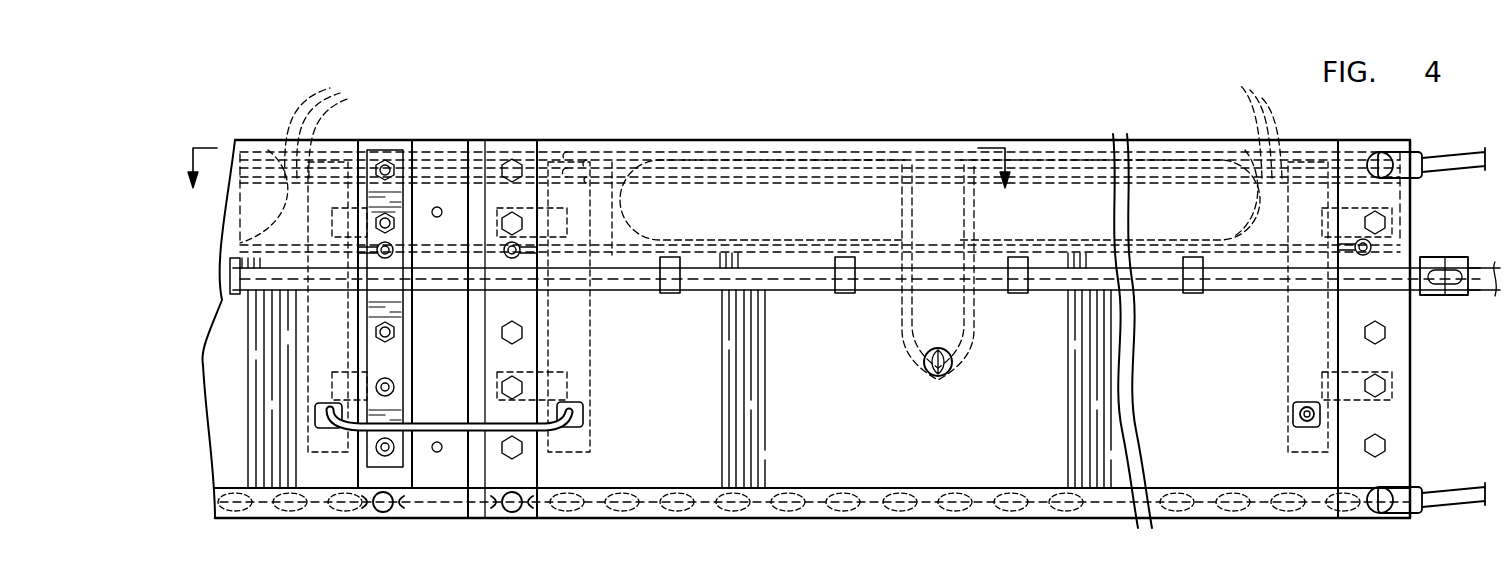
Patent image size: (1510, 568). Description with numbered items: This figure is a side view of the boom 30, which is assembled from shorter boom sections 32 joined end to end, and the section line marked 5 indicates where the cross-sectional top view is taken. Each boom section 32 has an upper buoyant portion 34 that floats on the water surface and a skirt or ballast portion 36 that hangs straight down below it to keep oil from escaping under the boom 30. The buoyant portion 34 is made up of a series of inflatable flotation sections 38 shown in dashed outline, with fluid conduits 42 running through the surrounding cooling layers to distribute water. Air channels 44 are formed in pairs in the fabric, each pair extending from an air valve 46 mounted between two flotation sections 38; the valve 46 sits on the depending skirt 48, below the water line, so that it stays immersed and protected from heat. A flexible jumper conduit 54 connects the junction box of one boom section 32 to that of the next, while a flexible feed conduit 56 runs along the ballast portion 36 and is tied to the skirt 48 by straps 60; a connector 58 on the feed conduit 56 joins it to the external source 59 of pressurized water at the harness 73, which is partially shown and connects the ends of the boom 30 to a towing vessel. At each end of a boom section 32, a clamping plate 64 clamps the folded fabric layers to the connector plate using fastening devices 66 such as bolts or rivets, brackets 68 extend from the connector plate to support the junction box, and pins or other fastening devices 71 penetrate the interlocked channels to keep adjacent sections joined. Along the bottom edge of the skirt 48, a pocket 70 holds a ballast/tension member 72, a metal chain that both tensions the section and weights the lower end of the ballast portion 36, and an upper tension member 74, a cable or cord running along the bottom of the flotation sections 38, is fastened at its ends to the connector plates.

The section line 5- 5 is at (598, 145).
The boom 30 is at (748, 114).
The boom section 32 is at (266, 124).
The buoyant portion 34 is at (208, 224).
The ballast portion 36 is at (208, 451).
The flotation section 38 is at (905, 160).
The fluid conduit 42 is at (783, 126).
The air channel 44 is at (900, 330).
The air valve 46 is at (947, 378).
The skirt 48 is at (1258, 460).
The jumper conduit 54 is at (548, 427).
The feed conduit 56 is at (1390, 285).
The connector 58 is at (1438, 258).
The external source of pressurized water 59 is at (1487, 292).
The strap 60 is at (672, 296).
The clamping plate 64 is at (383, 155).
The fastening device 66 is at (390, 385).
The bracket 68 is at (565, 378).
The pocket 70 is at (1032, 520).
The fastening device 71 is at (437, 207).
The ballast/tension member 72 is at (940, 506).
The harness 73 is at (1445, 158).
The upper tension member 74 is at (612, 258).